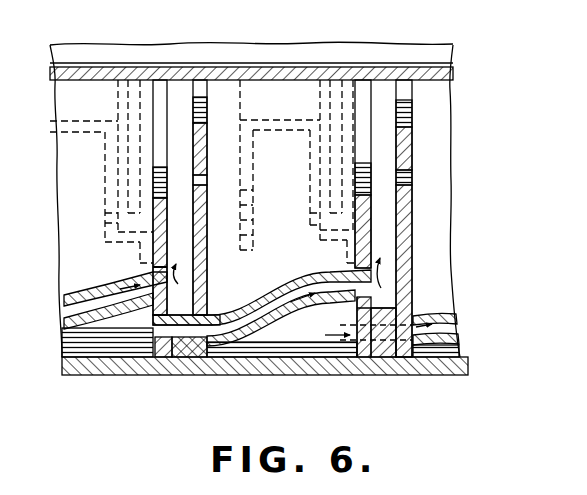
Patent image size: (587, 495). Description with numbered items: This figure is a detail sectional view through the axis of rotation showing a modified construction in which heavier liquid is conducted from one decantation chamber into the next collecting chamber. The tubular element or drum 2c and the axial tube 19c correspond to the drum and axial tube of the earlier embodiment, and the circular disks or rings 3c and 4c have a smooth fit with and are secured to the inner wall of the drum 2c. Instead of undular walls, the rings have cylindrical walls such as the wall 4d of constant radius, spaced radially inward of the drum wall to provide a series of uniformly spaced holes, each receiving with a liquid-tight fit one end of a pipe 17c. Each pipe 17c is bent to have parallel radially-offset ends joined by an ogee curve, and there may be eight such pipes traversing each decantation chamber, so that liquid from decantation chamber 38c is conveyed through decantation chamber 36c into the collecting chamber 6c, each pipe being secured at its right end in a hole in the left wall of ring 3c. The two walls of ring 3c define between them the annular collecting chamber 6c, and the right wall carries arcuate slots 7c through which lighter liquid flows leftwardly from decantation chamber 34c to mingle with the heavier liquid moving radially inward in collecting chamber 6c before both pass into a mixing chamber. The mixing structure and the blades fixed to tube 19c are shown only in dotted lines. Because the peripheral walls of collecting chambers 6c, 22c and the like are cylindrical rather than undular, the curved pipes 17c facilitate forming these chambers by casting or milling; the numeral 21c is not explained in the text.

The axial tube 19c is at (405, 48).
The decantation chamber 34c is at (455, 205).
The tubular element or drum 2c is at (315, 367).
The decantation chamber 38c is at (94, 163).
The decantation chamber 36c is at (300, 163).
The circular disk or ring 4c is at (200, 141).
The gap in column 21c is at (207, 181).
The collecting chamber 22c is at (190, 268).
The cylindrical wall 4d is at (208, 292).
The circular disk or ring 3c is at (410, 144).
The arcuate slots 7c is at (407, 179).
The collecting chamber 6c is at (390, 248).
The pipes 17c is at (121, 279).